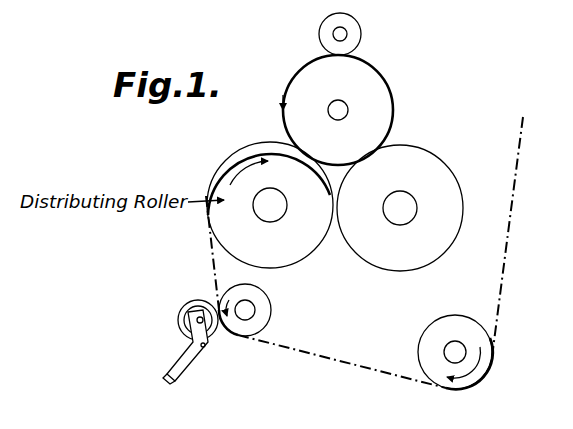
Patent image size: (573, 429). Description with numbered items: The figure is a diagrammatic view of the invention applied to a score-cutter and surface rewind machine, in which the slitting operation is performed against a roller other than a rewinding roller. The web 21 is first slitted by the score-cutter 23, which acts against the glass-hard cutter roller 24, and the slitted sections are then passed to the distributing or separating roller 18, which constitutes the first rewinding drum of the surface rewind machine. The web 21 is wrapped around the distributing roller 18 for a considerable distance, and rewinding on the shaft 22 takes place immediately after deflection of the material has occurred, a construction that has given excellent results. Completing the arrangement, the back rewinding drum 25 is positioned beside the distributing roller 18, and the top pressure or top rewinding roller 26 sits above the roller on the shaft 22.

The distributing or separating roller 18 is at (230, 227).
The web 21 is at (333, 358).
The shaft 22 is at (346, 107).
The score-cutter 23 is at (181, 322).
The glass-hard cutter roller 24 is at (267, 308).
The back rewinding drum 25 is at (437, 175).
The top pressure or top rewinding roller 26 is at (356, 33).